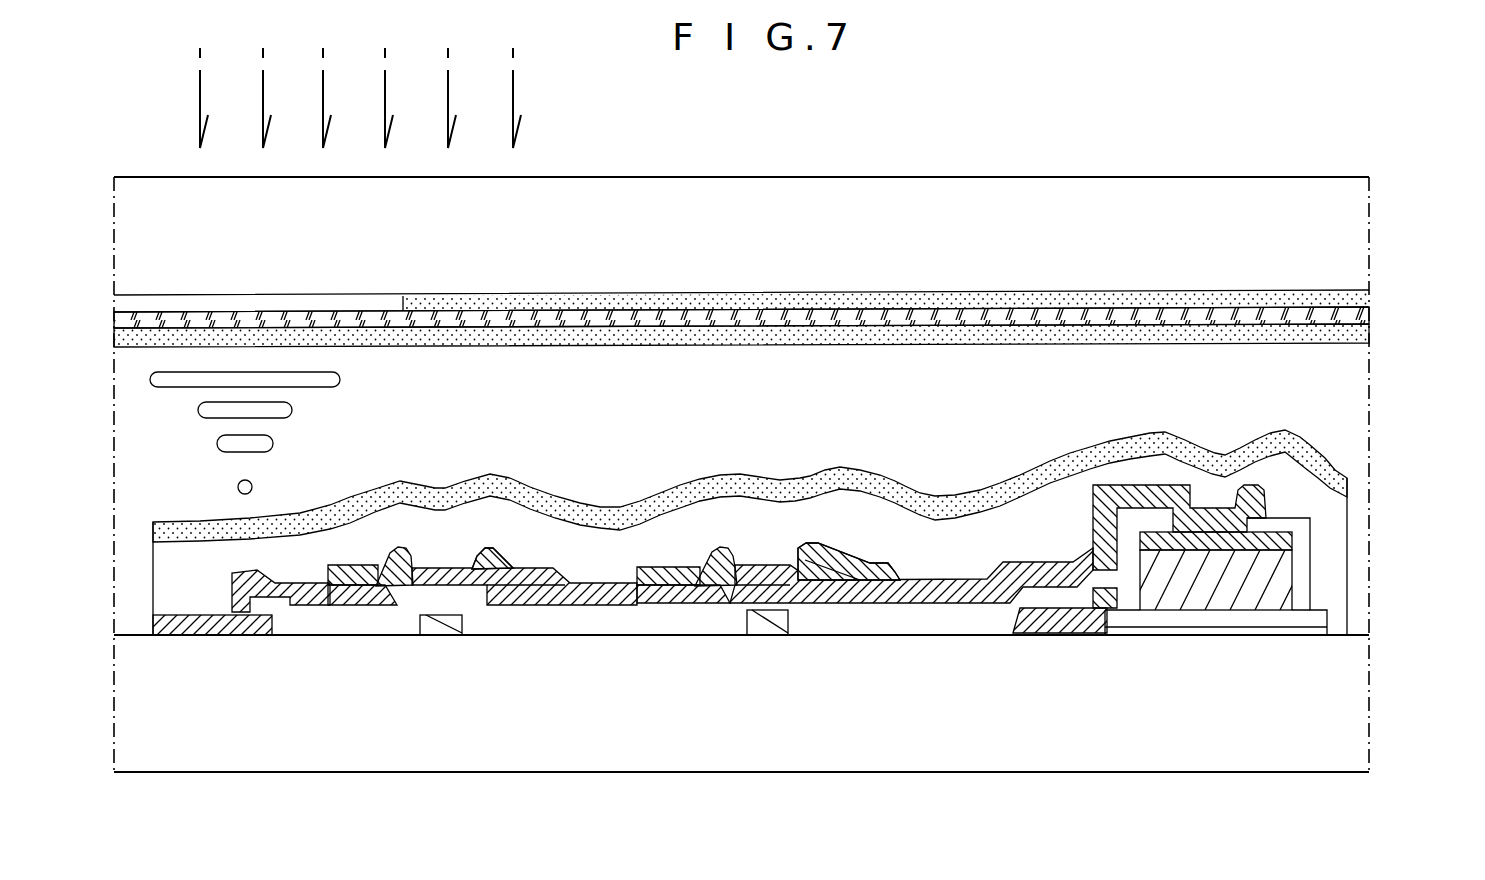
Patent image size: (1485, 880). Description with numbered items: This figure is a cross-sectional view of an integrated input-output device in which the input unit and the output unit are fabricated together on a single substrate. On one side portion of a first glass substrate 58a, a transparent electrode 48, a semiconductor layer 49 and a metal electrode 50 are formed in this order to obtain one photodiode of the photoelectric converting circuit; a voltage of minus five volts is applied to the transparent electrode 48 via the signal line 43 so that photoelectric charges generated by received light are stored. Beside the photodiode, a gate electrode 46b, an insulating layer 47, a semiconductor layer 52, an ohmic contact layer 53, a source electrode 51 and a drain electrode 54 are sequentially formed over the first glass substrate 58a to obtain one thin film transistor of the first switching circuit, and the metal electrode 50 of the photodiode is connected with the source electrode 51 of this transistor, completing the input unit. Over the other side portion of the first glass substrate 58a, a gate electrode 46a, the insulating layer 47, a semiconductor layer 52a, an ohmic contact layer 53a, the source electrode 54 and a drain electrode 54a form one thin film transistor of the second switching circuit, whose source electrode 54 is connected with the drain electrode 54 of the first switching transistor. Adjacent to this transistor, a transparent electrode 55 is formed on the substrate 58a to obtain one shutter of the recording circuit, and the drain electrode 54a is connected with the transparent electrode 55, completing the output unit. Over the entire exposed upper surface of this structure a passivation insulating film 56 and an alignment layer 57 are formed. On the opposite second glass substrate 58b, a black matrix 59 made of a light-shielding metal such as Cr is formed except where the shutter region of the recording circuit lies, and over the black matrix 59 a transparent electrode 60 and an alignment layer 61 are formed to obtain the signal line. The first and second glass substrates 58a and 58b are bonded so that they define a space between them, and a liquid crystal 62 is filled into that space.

The signal line 43 is at (1053, 624).
The gate electrode 46a is at (437, 636).
The gate electrode 46b is at (762, 636).
The insulating layer 47 is at (905, 621).
The transparent electrode 48 is at (1162, 625).
The semiconductor layer 49 is at (1265, 602).
The metal electrode 50 is at (1190, 530).
The source electrode 51 is at (1005, 578).
The semiconductor layer 52 is at (770, 573).
The semiconductor layer 52a is at (455, 572).
The ohmic contact layer 53 is at (695, 567).
The ohmic contact layer 53a is at (373, 583).
The drain electrode 54 is at (600, 605).
The drain electrode 54a is at (297, 583).
The transparent electrode 55 is at (245, 636).
The passivation insulating film 56 is at (592, 560).
The alignment layer 57 is at (1275, 425).
The first glass substrate 58a is at (1362, 698).
The second glass substrate 58b is at (1362, 214).
The black matrix 59 is at (1368, 296).
The transparent electrode 60 is at (1367, 316).
The alignment layer 61 is at (1365, 343).
The liquid crystal 62 is at (1362, 400).